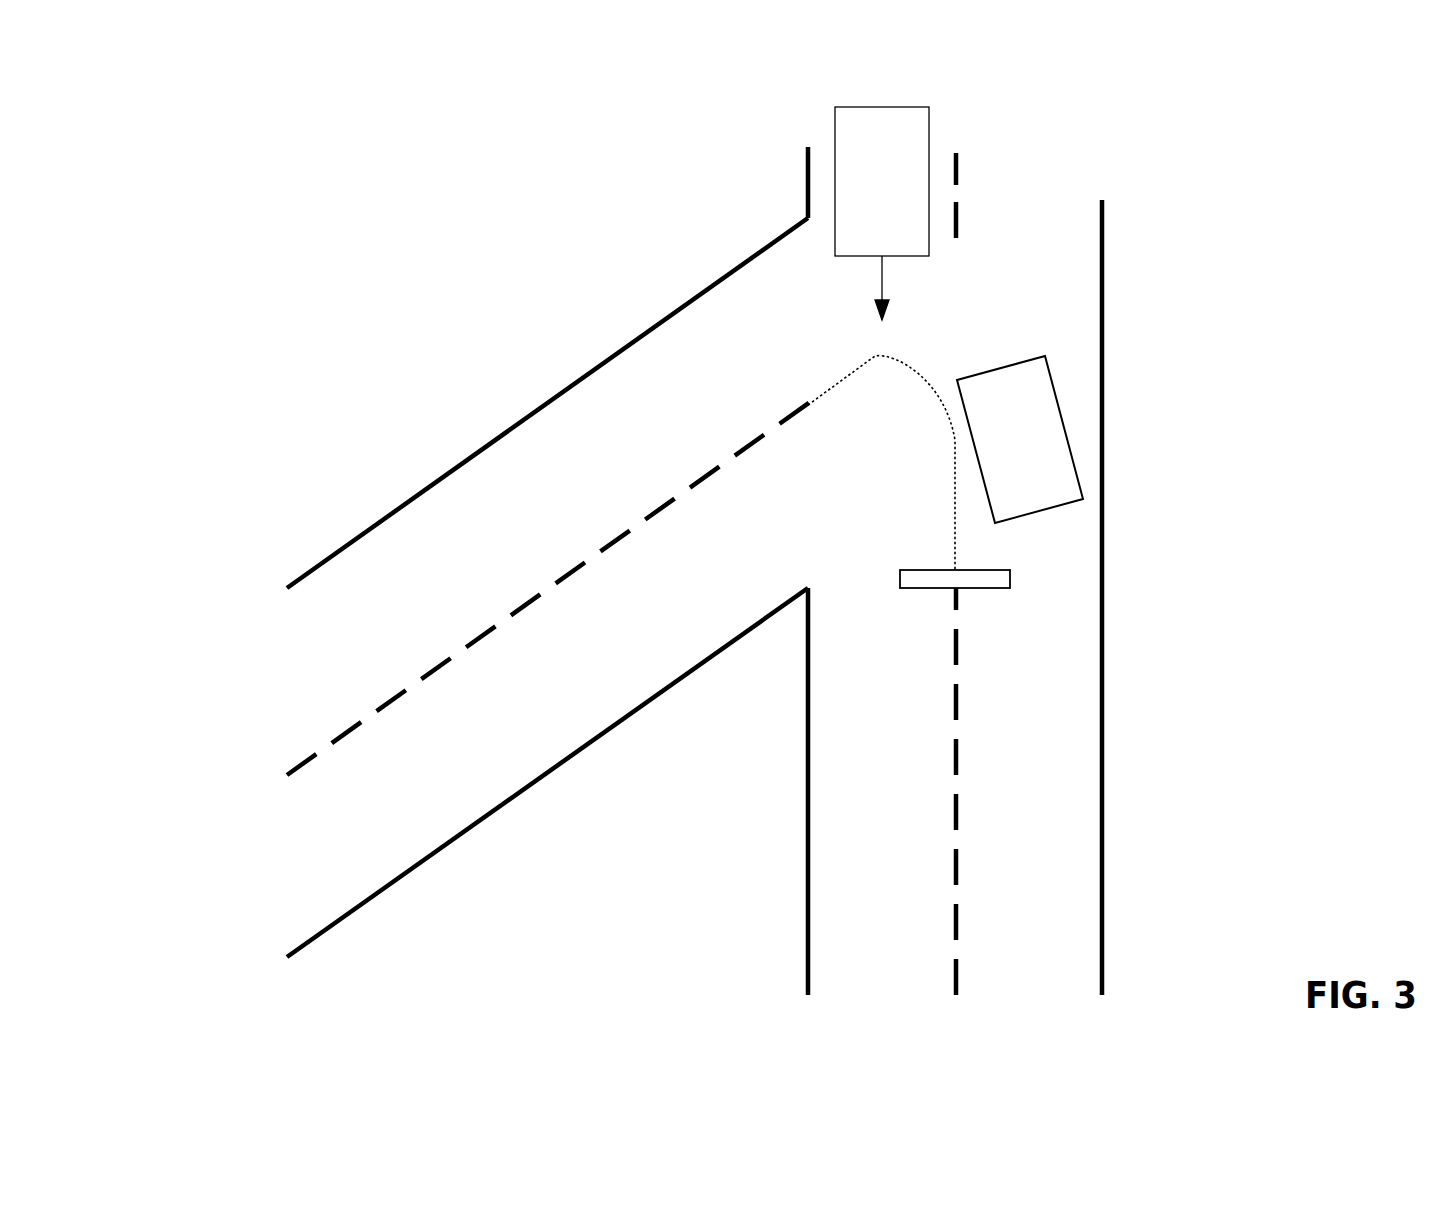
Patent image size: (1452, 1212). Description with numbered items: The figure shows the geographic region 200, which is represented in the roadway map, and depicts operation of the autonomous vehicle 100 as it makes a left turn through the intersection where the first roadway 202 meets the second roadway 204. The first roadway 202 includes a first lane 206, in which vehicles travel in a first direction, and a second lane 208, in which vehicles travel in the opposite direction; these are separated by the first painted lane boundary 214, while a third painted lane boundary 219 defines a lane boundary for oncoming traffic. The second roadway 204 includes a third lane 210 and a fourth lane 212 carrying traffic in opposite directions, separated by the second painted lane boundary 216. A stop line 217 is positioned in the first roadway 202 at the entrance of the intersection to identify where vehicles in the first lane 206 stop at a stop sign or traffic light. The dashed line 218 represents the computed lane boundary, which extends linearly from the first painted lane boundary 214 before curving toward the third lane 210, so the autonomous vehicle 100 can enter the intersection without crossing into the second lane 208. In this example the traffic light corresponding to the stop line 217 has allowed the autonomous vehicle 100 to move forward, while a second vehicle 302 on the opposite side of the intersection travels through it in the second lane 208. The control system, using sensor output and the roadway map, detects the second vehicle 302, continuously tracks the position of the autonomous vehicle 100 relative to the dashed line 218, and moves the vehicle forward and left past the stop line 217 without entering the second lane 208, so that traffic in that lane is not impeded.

The autonomous vehicle 100 is at (1014, 500).
The geographic region 200 is at (1212, 246).
The first roadway 202 is at (864, 968).
The second roadway 204 is at (252, 858).
The first lane 206 is at (1047, 916).
The second lane 208 is at (900, 896).
The third lane 210 is at (592, 491).
The fourth lane 212 is at (555, 712).
The first painted lane boundary 214 is at (955, 735).
The second painted lane boundary 216 is at (332, 740).
The stop line 217 is at (920, 570).
The dashed line 218 is at (955, 475).
The third painted lane boundary 219 is at (959, 215).
The second vehicle 302 is at (900, 249).